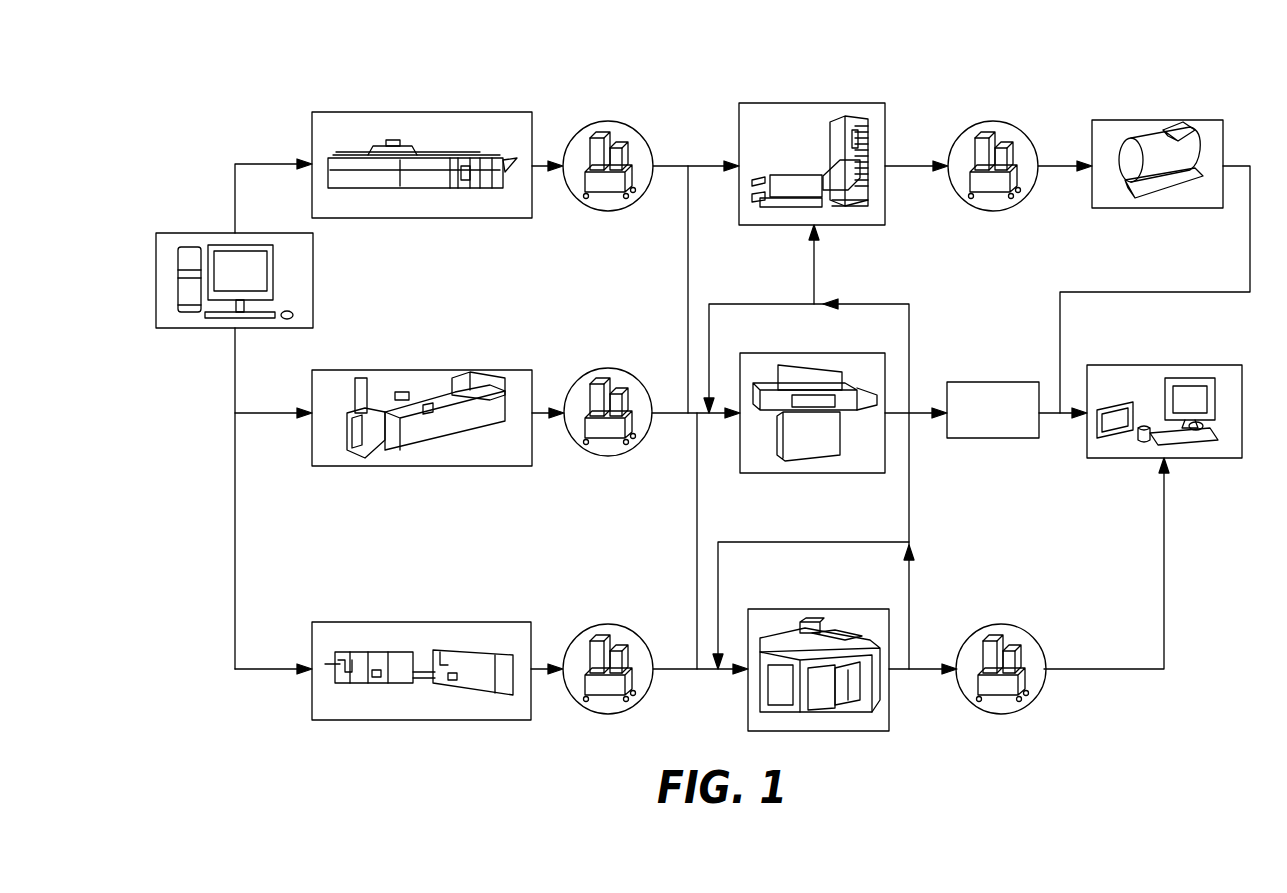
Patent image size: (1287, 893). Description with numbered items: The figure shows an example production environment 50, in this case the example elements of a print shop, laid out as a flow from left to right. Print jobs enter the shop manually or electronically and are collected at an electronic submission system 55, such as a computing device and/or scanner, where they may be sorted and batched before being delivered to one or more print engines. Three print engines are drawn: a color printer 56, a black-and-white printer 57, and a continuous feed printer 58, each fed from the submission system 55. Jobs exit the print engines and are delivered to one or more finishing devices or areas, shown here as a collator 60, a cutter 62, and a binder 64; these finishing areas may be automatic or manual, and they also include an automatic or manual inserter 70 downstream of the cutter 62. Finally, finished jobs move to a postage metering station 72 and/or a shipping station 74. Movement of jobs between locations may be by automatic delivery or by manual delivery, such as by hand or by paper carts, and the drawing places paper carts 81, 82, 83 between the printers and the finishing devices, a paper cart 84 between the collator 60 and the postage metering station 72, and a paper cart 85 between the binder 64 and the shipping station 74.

The production environment 50 is at (240, 138).
The electronic submission system 55 is at (200, 328).
The color printer 56 is at (427, 218).
The black-and-white printer 57 is at (427, 466).
The continuous feed printer 58 is at (422, 720).
The collator 60 is at (780, 225).
The cutter 62 is at (818, 473).
The binder 64 is at (862, 731).
The inserter 70 is at (992, 438).
The postage metering station 72 is at (1170, 208).
The shipping station 74 is at (1209, 458).
The paper cart 81 is at (608, 211).
The paper cart 82 is at (607, 457).
The paper cart 83 is at (608, 714).
The paper cart 84 is at (993, 211).
The paper cart 85 is at (1003, 714).